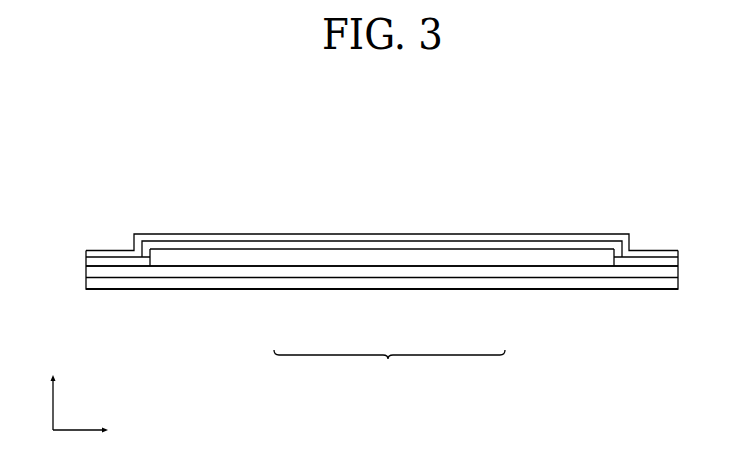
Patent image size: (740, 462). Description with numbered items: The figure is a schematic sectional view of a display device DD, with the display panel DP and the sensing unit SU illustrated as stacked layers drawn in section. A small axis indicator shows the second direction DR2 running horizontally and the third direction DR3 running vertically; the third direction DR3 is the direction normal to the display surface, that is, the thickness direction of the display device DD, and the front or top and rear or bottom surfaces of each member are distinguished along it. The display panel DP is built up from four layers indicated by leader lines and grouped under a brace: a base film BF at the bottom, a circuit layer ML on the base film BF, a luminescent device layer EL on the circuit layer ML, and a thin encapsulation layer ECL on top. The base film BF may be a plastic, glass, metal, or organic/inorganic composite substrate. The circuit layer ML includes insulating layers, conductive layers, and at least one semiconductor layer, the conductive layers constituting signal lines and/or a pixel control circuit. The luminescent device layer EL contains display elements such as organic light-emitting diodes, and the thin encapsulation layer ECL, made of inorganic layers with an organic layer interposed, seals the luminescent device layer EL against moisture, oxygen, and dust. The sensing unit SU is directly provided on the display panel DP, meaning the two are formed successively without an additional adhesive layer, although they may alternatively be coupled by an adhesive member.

The display device DD is at (547, 163).
The sensing unit SU is at (381, 236).
The display panel DP is at (382, 317).
The base film BF is at (283, 283).
The circuit layer ML is at (343, 272).
The luminescent device layer EL is at (418, 259).
The thin encapsulation layer ECL is at (486, 245).
The third direction DR3 is at (53, 391).
The second direction DR2 is at (97, 430).